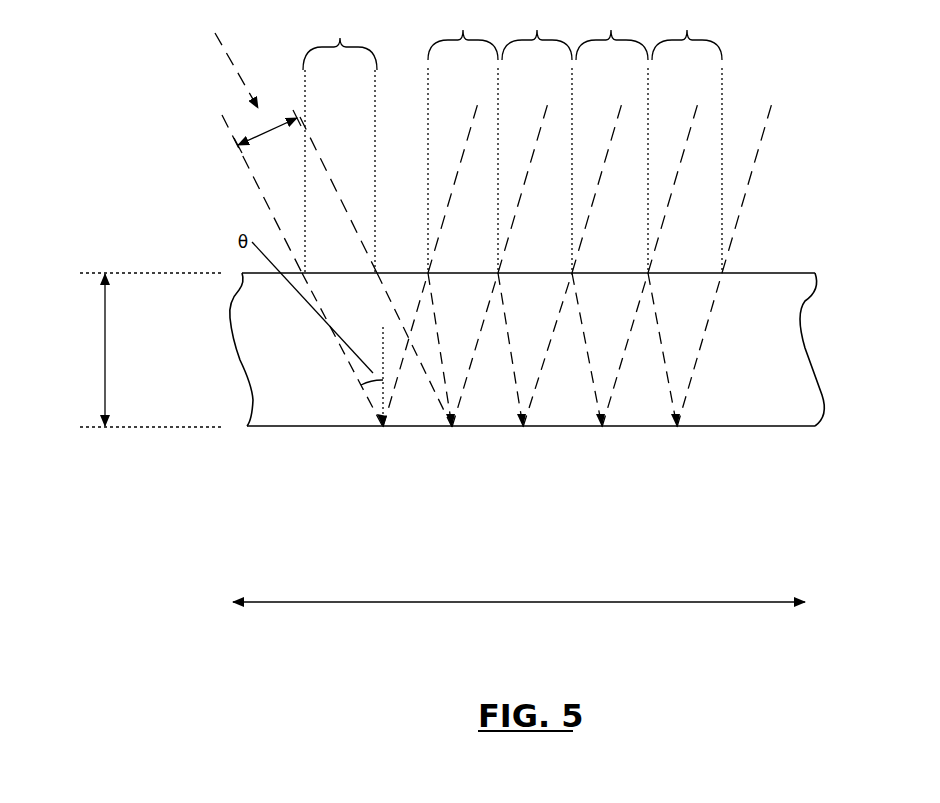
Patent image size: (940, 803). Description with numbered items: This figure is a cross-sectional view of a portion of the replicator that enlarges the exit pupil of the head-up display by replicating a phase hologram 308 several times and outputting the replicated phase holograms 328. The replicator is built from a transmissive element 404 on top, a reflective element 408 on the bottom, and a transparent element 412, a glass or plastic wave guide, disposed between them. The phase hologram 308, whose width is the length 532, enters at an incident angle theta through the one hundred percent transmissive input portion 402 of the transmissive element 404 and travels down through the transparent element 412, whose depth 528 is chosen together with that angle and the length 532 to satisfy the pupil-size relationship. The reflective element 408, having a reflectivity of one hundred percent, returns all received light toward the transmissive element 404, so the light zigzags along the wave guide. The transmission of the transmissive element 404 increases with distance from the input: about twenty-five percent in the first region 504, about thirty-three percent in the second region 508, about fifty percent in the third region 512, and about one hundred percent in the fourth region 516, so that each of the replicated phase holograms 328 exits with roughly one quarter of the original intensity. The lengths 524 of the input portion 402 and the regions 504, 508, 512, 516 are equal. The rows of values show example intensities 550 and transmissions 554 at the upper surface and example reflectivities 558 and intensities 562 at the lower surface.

The phase hologram 308 is at (231, 60).
The replicated phase holograms 328 is at (800, 142).
The input portion 402 is at (340, 145).
The transmissive element 404 is at (253, 272).
The reflective element 408 is at (342, 427).
The transparent element 412 is at (295, 357).
The first region 504 is at (463, 142).
The second region 508 is at (537, 142).
The third region 512 is at (612, 142).
The fourth region 516 is at (687, 142).
The lengths 524 is at (507, 602).
The depth 528 is at (105, 340).
The length of the phase hologram 532 is at (268, 131).
The intensities 550 is at (740, 237).
The transmissions 554 is at (737, 258).
The reflectivities 558 is at (727, 442).
The intensities 562 is at (722, 462).